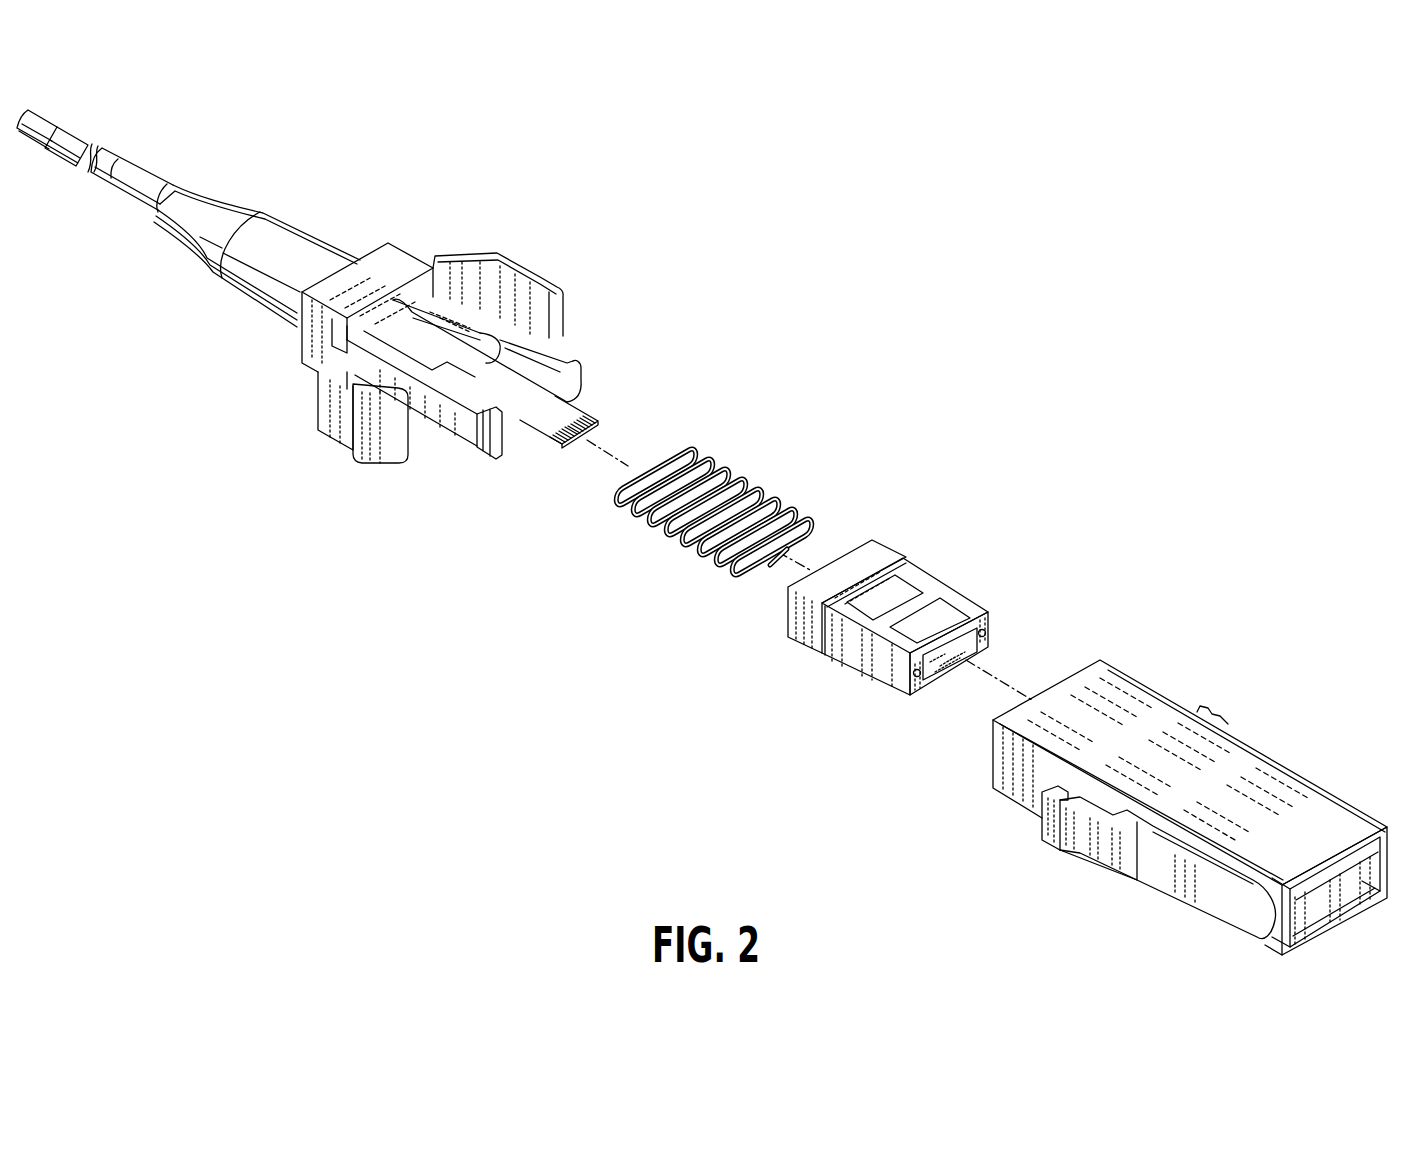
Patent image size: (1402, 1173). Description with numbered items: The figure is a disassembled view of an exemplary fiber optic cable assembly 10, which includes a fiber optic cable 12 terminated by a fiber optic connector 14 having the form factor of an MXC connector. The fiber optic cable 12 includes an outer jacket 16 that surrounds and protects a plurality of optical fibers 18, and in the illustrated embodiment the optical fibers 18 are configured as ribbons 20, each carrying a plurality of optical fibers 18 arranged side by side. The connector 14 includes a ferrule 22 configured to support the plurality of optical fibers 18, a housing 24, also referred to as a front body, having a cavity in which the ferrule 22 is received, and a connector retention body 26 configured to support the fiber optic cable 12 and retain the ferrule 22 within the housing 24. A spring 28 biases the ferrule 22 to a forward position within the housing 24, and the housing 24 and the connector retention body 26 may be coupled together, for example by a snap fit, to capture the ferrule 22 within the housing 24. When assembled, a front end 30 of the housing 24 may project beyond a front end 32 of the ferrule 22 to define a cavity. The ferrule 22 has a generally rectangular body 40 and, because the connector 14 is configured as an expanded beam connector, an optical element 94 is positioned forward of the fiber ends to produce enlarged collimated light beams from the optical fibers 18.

The fiber optic cable assembly 10 is at (1088, 242).
The fiber optic cable 12 is at (280, 213).
The fiber optic connector 14 is at (944, 342).
The outer jacket 16 is at (52, 121).
The optical fibers 18 is at (597, 420).
The ribbons 20 is at (560, 415).
The ferrule 22 is at (962, 550).
The housing 24 is at (1273, 732).
The connector retention body 26 is at (533, 249).
The spring 28 is at (745, 486).
The front end of the housing 30 is at (1323, 923).
The front end of the ferrule 32 is at (932, 677).
The body 40 is at (974, 592).
The optical element 94 is at (972, 653).